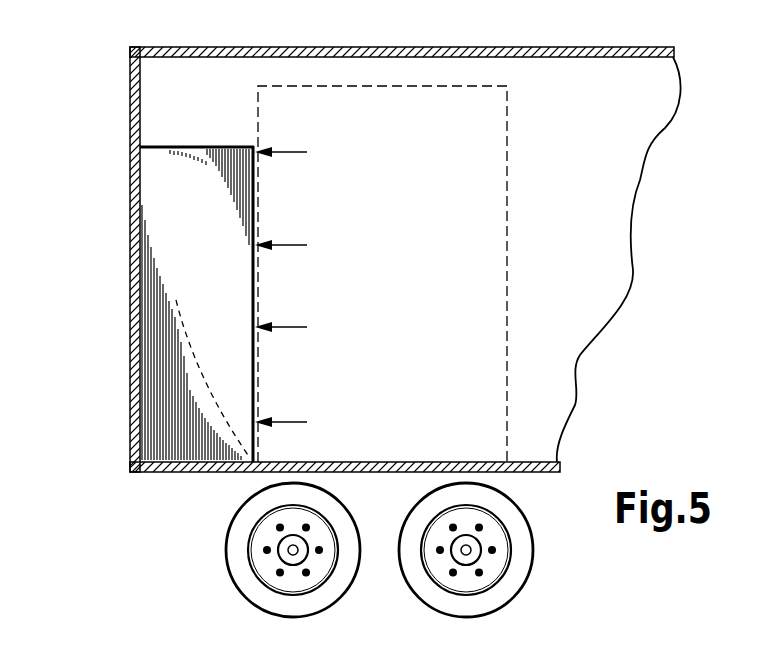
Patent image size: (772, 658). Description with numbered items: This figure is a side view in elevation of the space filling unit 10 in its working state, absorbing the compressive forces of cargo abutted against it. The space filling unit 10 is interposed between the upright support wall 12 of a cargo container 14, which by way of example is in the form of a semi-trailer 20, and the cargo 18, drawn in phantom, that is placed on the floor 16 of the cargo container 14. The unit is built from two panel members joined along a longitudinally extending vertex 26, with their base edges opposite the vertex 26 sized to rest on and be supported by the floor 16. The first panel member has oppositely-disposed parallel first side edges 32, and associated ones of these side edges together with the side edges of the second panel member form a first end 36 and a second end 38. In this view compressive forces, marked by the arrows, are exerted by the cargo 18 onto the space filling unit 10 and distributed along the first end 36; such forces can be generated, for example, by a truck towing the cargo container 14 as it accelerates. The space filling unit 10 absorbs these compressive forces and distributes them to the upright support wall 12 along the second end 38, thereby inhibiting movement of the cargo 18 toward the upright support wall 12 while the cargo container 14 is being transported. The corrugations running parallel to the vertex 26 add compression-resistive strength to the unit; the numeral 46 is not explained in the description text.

The space filling unit 10 is at (359, 237).
The upright support wall 12 is at (121, 260).
The cargo container 14 is at (405, 30).
The floor 16 is at (390, 461).
The cargo 18 is at (507, 155).
The semi-trailer 20 is at (278, 46).
The longitudinally extending vertex 26 is at (249, 231).
The first side edges 32 is at (136, 296).
The first end 36 is at (200, 304).
The second end 38 is at (136, 361).
The crushed region 46 is at (163, 147).